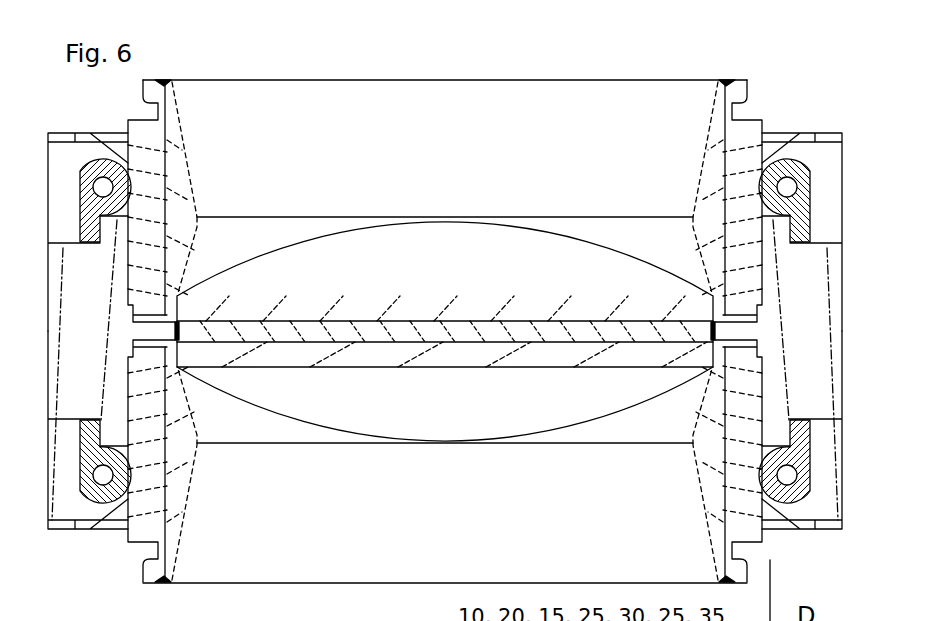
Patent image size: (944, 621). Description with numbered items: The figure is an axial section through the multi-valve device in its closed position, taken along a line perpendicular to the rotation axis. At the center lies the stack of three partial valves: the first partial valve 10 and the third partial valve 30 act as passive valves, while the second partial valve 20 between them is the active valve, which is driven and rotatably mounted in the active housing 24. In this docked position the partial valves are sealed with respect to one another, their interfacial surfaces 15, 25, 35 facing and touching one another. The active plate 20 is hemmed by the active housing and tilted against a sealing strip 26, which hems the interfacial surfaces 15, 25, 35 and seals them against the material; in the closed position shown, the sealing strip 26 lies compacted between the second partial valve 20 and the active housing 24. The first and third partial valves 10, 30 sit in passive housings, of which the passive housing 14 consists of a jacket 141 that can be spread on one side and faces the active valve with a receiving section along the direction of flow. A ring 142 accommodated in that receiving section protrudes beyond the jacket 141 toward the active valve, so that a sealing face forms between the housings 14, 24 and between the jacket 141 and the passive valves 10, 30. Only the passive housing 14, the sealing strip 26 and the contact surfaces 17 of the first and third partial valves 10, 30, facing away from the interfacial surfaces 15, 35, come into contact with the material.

The active housing 24 is at (62, 192).
The passive housing 14 is at (130, 143).
The jacket 141 is at (445, 299).
The ring 142 is at (180, 155).
The sealing strip 26 is at (205, 283).
The contact surface 17 is at (335, 273).
The first partial valve 10 is at (357, 302).
The second partial valve 20 is at (395, 328).
The interfacial surface 15 is at (457, 320).
The interfacial surface 25 is at (478, 179).
The third partial valve 30 is at (478, 353).
The interfacial surface 35 is at (555, 340).